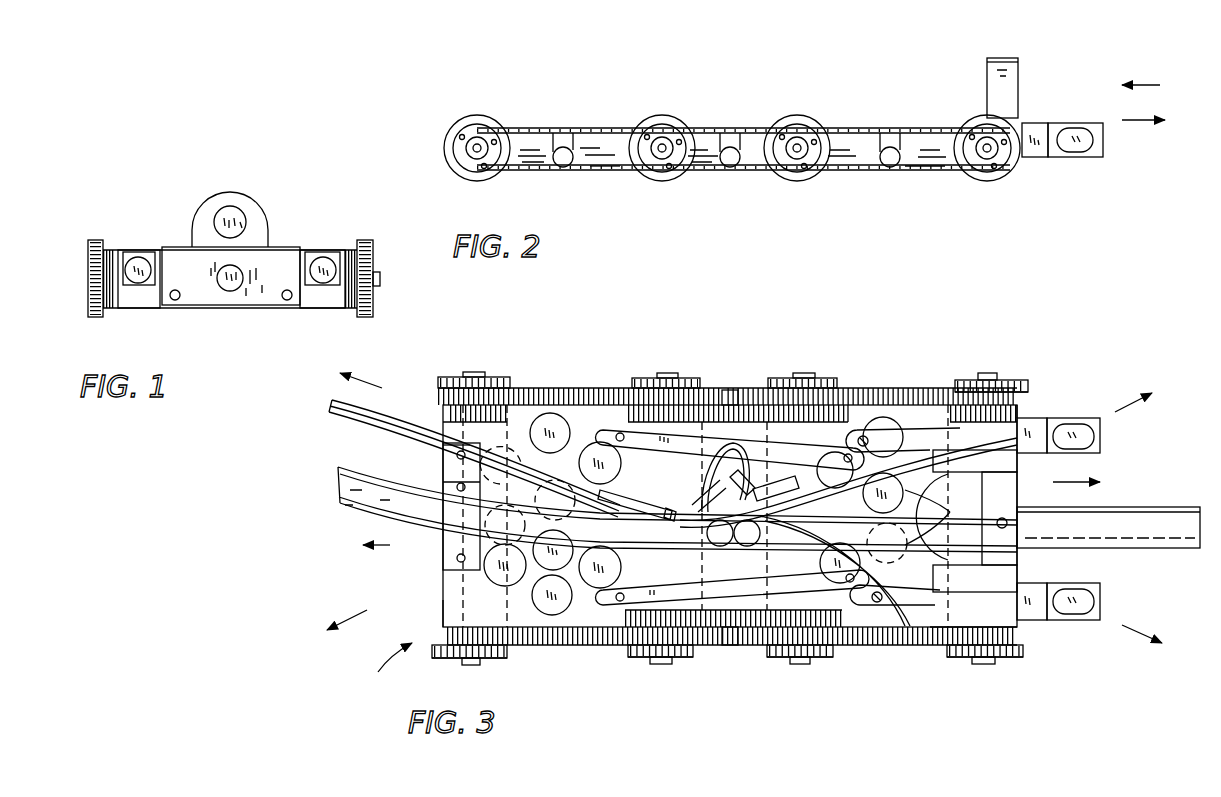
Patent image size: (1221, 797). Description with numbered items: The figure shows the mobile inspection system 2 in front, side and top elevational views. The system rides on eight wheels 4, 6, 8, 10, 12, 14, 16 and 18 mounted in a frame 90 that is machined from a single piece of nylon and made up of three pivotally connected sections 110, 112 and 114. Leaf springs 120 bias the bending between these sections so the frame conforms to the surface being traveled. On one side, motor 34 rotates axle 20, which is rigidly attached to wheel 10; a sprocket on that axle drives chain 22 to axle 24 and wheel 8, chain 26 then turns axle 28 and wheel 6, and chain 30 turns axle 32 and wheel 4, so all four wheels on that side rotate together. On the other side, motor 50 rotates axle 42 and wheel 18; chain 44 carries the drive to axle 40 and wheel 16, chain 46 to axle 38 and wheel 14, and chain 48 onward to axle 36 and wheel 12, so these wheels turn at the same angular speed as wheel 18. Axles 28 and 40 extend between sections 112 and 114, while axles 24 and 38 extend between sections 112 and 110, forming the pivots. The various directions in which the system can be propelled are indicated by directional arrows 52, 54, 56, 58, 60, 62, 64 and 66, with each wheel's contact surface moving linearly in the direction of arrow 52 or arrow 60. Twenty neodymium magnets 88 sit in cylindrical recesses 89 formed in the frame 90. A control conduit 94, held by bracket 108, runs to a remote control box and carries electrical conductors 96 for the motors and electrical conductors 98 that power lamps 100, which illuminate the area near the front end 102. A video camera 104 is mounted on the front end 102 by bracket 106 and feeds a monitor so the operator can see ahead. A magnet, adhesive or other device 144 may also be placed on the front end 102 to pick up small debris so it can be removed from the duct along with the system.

In FIG. 3, the inspection system 2 is at (385, 666).
In FIG. 1, the wheel 4 is at (365, 240).
In FIG. 3, the wheel 4 is at (962, 380).
In FIG. 3, the wheel 6 is at (782, 388).
In FIG. 3, the wheel 8 is at (638, 388).
In FIG. 3, the wheel 10 is at (522, 388).
In FIG. 2, the wheel 12 is at (494, 178).
In FIG. 3, the wheel 12 is at (500, 658).
In FIG. 2, the wheel 14 is at (680, 176).
In FIG. 3, the wheel 14 is at (683, 657).
In FIG. 2, the wheel 16 is at (818, 178).
In FIG. 3, the wheel 16 is at (828, 657).
In FIG. 1, the wheel 18 is at (95, 240).
In FIG. 2, the wheel 18 is at (1006, 180).
In FIG. 3, the wheel 18 is at (1020, 657).
In FIG. 3, the axle 20 is at (472, 372).
In FIG. 3, the chain 22 is at (617, 415).
In FIG. 3, the axle 24 is at (668, 373).
In FIG. 3, the chain 26 is at (718, 405).
In FIG. 3, the axle 28 is at (802, 373).
In FIG. 1, the chain 30 is at (350, 250).
In FIG. 3, the chain 30 is at (908, 406).
In FIG. 1, the axle 32 is at (380, 280).
In FIG. 3, the axle 32 is at (990, 373).
In FIG. 3, the motor 34 is at (450, 422).
In FIG. 2, the axle 36 is at (481, 146).
In FIG. 3, the axle 36 is at (471, 665).
In FIG. 2, the axle 38 is at (667, 146).
In FIG. 3, the axle 38 is at (660, 664).
In FIG. 2, the axle 40 is at (802, 146).
In FIG. 3, the axle 40 is at (798, 664).
In FIG. 1, the axle 42 is at (84, 290).
In FIG. 2, the axle 42 is at (991, 147).
In FIG. 3, the axle 42 is at (985, 664).
In FIG. 1, the chain 44 is at (118, 250).
In FIG. 3, the chain 44 is at (936, 645).
In FIG. 3, the chain 46 is at (705, 610).
In FIG. 3, the chain 48 is at (575, 645).
In FIG. 3, the motor 50 is at (1017, 418).
In FIG. 2, the directional arrow 52 is at (1140, 120).
In FIG. 3, the directional arrow 52 is at (1072, 482).
In FIG. 2, the directional arrow 54 is at (1160, 85).
In FIG. 3, the directional arrow 54 is at (1135, 630).
In FIG. 3, the directional arrow 56 is at (668, 522).
In FIG. 3, the directional arrow 58 is at (370, 386).
In FIG. 3, the directional arrow 60 is at (390, 545).
In FIG. 3, the directional arrow 62 is at (355, 620).
In FIG. 3, the directional arrow 64 is at (765, 540).
In FIG. 3, the directional arrow 66 is at (1128, 408).
In FIG. 3, the magnet 88 is at (575, 448).
In FIG. 3, the recess 89 is at (546, 413).
In FIG. 1, the frame 90 is at (318, 262).
In FIG. 2, the frame 90 is at (600, 136).
In FIG. 3, the frame 90 is at (447, 612).
In FIG. 3, the control conduit 94 is at (352, 425).
In FIG. 3, the electrical conductors 96 is at (708, 490).
In FIG. 3, the electrical conductors 98 is at (893, 605).
In FIG. 1, the lamp 100 is at (142, 260).
In FIG. 2, the lamp 100 is at (1073, 152).
In FIG. 3, the lamp 100 is at (1100, 436).
In FIG. 1, the front end 102 is at (237, 296).
In FIG. 2, the front end 102 is at (1040, 125).
In FIG. 3, the front end 102 is at (1032, 519).
In FIG. 3, the camera 104 is at (1148, 515).
In FIG. 1, the bracket 106 is at (245, 200).
In FIG. 2, the bracket 106 is at (1010, 58).
In FIG. 3, the bracket 106 is at (1000, 555).
In FIG. 3, the bracket 108 is at (445, 460).
In FIG. 2, the frame section 110 is at (602, 170).
In FIG. 3, the frame section 110 is at (615, 400).
In FIG. 2, the frame section 112 is at (736, 166).
In FIG. 3, the frame section 112 is at (752, 610).
In FIG. 2, the frame section 114 is at (925, 170).
In FIG. 3, the frame section 114 is at (856, 412).
In FIG. 3, the leaf spring 120 is at (738, 600).
In FIG. 1, the debris-attaching device 144 is at (223, 290).